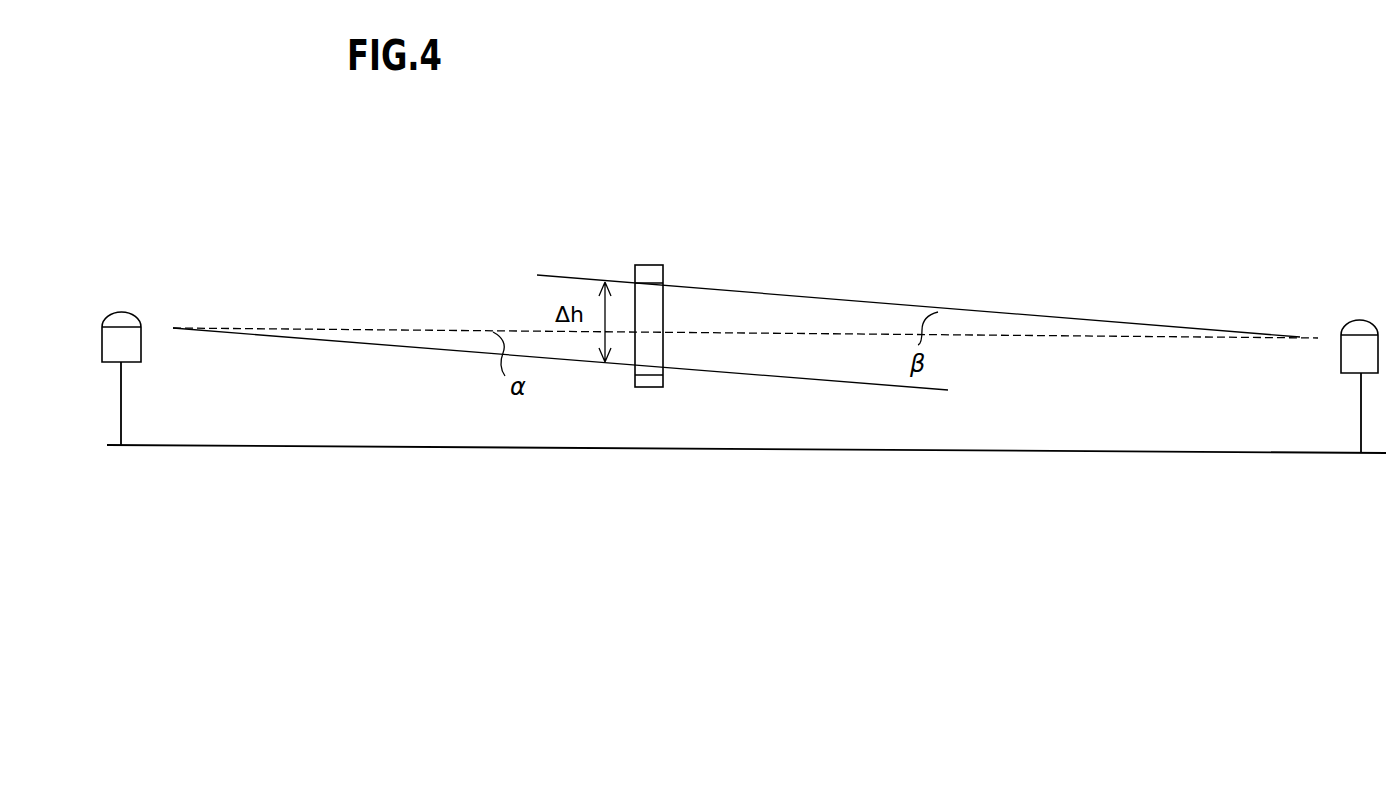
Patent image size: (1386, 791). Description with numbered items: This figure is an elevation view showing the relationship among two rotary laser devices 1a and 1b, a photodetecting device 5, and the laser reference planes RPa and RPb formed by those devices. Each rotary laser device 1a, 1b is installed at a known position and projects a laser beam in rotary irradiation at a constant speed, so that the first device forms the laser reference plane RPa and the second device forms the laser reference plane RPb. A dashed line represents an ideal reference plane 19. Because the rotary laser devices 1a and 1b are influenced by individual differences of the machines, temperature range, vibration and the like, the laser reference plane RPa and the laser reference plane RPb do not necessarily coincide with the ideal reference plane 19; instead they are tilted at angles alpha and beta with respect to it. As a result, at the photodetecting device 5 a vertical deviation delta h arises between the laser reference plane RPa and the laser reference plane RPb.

The rotary laser device 1a is at (141, 337).
The rotary laser device 1b is at (1356, 320).
The photodetecting device 5 is at (662, 282).
The ideal reference plane 19 is at (762, 333).
The laser reference plane RPa is at (778, 378).
The laser reference plane RPb is at (867, 300).